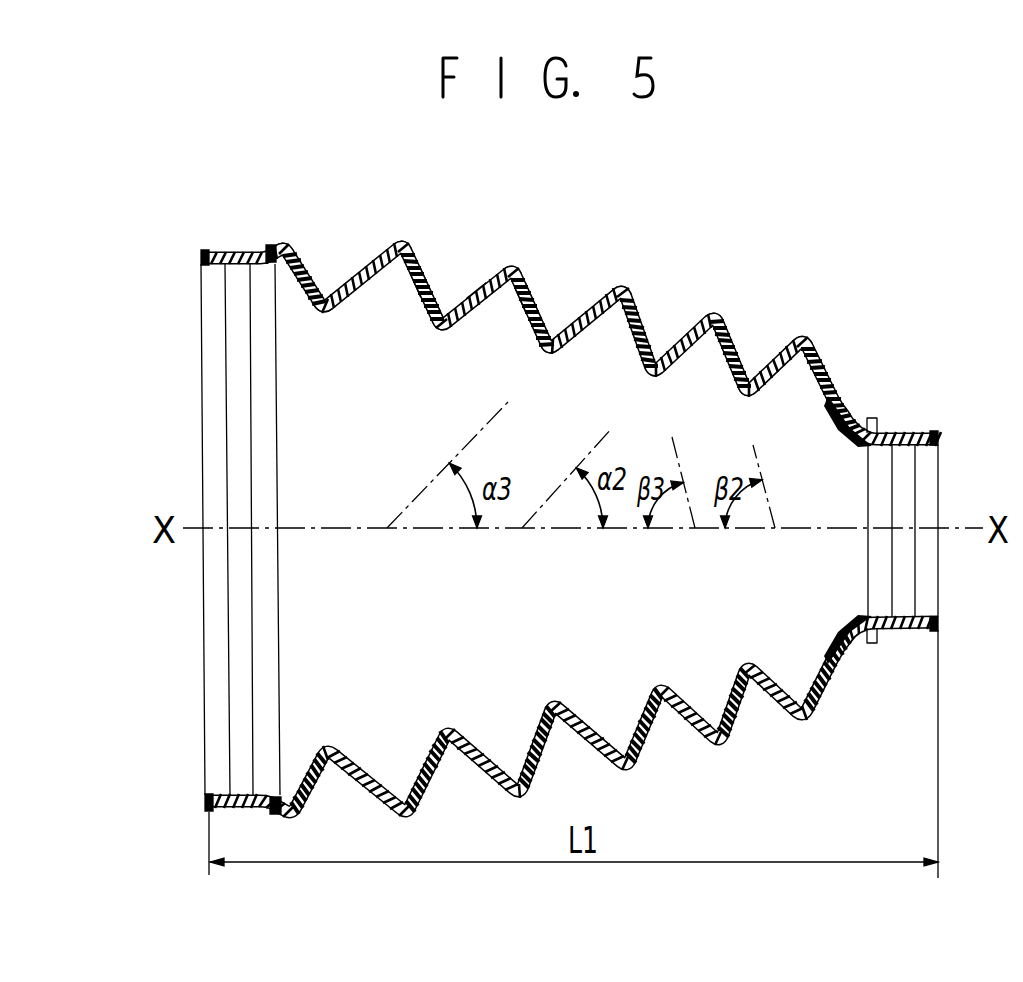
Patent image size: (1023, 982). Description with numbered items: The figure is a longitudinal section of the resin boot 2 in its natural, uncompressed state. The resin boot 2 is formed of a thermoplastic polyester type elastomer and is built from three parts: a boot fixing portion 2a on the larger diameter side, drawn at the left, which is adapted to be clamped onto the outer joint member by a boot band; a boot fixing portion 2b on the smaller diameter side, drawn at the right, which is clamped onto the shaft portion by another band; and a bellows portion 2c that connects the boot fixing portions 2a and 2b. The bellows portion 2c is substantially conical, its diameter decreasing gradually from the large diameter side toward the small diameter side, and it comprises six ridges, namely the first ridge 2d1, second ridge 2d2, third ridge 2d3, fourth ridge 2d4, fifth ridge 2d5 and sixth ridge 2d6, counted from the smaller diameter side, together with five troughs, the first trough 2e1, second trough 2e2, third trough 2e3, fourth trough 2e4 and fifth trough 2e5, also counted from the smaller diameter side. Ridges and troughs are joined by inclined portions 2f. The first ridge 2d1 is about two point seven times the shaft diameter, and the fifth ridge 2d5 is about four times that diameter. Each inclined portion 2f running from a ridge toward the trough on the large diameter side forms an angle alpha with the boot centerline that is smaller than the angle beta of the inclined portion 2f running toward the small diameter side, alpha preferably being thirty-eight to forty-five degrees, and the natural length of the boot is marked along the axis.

The resin boot 2 is at (737, 272).
The boot fixing portion on the larger diameter side 2a is at (218, 257).
The boot fixing portion on the smaller diameter side 2b is at (923, 432).
The bellows portion 2c is at (538, 298).
The first ridge 2d1 is at (805, 332).
The second ridge 2d2 is at (718, 308).
The third ridge 2d3 is at (625, 283).
The fourth ridge 2d4 is at (515, 262).
The fifth ridge 2d5 is at (403, 237).
The sixth ridge 2d6 is at (285, 242).
The first trough 2e1 is at (747, 402).
The second trough 2e2 is at (653, 384).
The third trough 2e3 is at (548, 360).
The fourth trough 2e4 is at (441, 338).
The fifth trough 2e5 is at (323, 319).
The inclined portion 2f is at (480, 282).